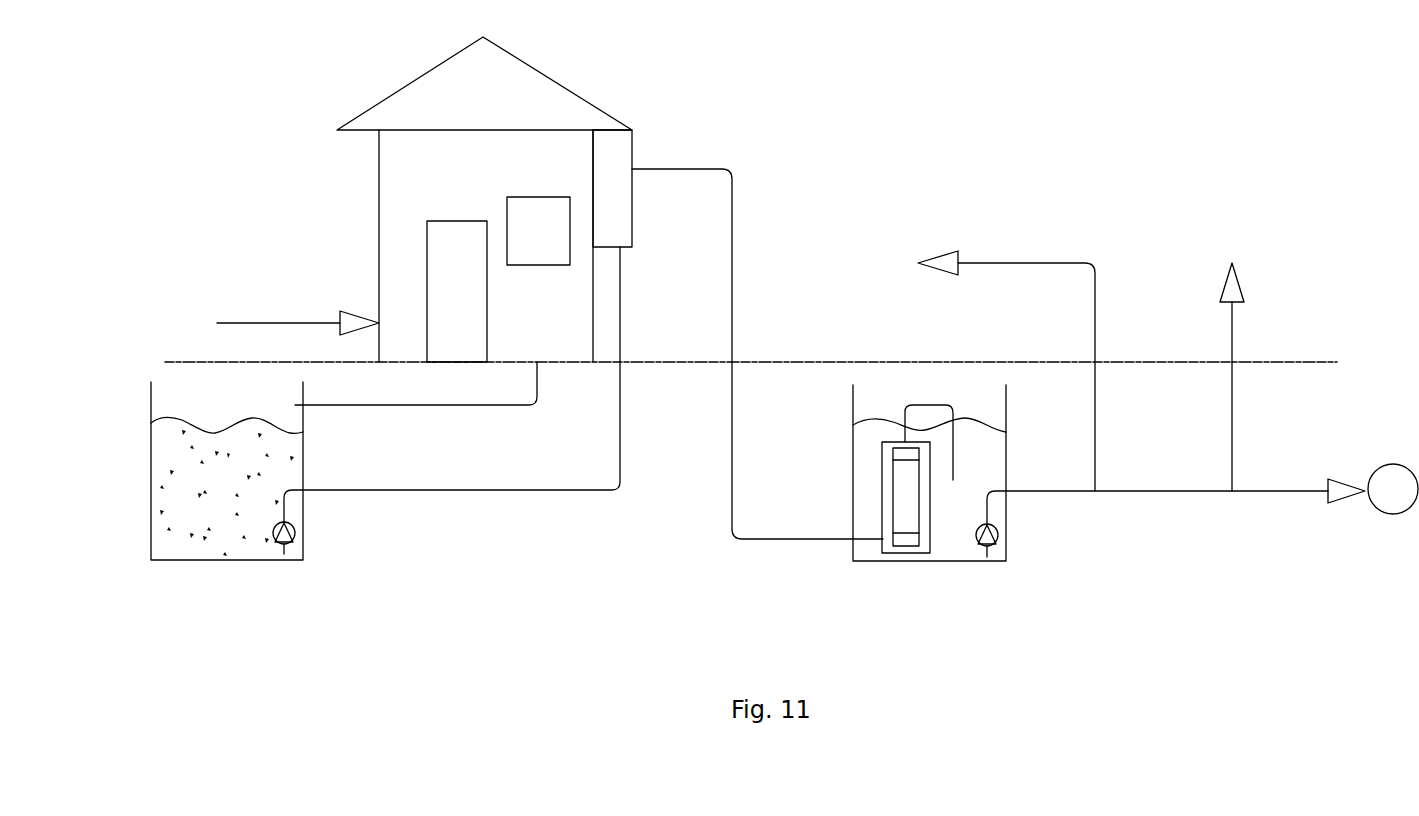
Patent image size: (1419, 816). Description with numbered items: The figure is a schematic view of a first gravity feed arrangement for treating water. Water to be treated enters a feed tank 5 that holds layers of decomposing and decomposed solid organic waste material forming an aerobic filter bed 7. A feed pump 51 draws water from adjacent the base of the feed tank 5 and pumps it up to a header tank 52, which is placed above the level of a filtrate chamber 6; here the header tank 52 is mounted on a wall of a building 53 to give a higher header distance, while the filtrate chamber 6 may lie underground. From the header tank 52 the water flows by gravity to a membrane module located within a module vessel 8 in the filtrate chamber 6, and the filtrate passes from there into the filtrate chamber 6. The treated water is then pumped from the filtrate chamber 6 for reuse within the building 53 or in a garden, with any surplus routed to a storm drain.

The feed tank 5 is at (151, 462).
The filtrate chamber 6 is at (853, 453).
The aerobic filter bed 7 is at (168, 538).
The module vessel 8 is at (884, 558).
The feed pump 51 is at (288, 541).
The header tank 52 is at (633, 220).
The building 53 is at (388, 192).